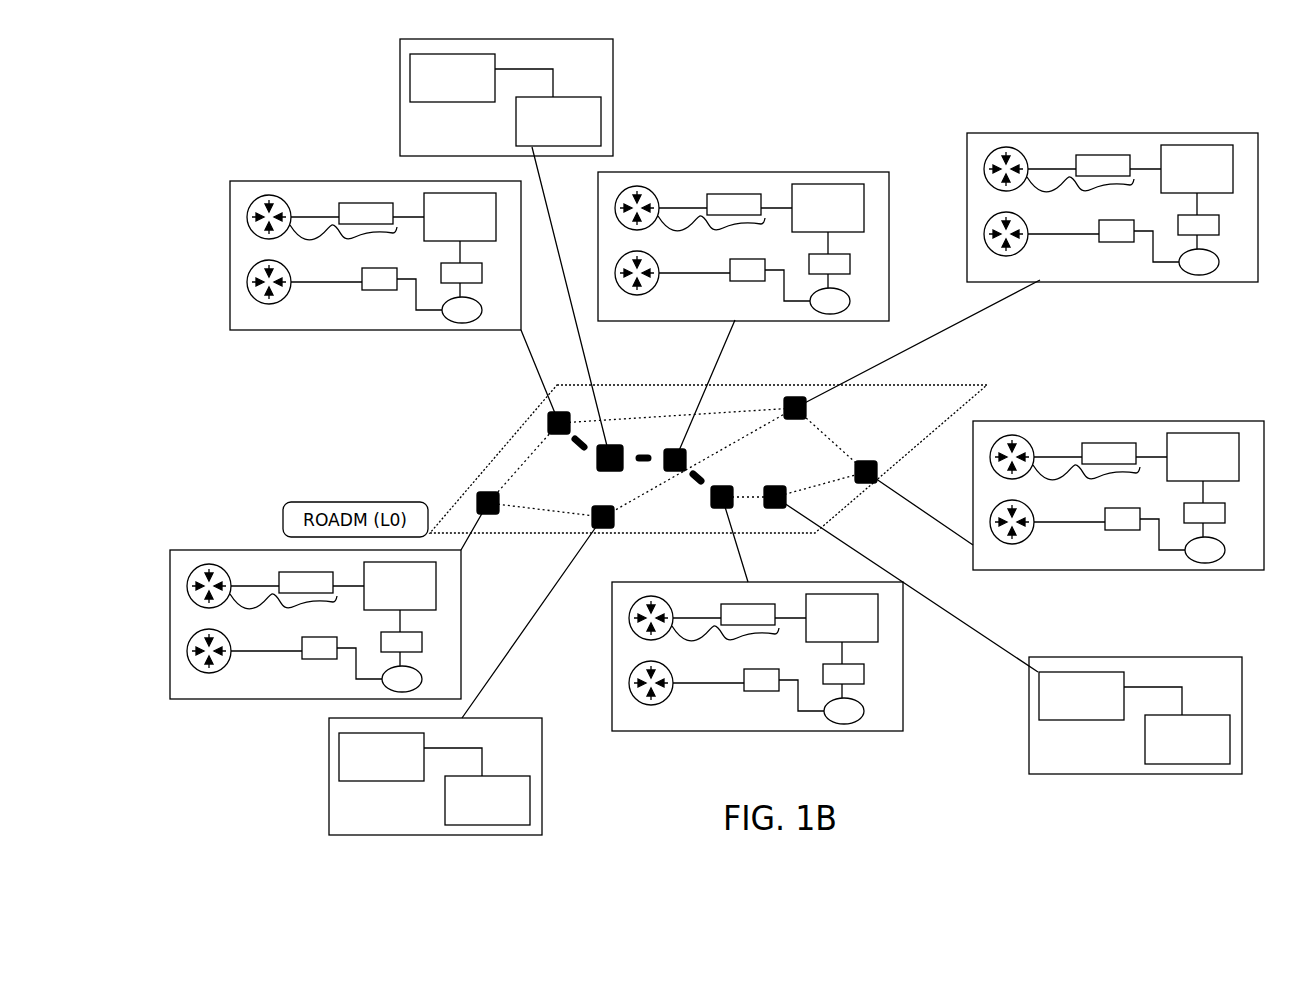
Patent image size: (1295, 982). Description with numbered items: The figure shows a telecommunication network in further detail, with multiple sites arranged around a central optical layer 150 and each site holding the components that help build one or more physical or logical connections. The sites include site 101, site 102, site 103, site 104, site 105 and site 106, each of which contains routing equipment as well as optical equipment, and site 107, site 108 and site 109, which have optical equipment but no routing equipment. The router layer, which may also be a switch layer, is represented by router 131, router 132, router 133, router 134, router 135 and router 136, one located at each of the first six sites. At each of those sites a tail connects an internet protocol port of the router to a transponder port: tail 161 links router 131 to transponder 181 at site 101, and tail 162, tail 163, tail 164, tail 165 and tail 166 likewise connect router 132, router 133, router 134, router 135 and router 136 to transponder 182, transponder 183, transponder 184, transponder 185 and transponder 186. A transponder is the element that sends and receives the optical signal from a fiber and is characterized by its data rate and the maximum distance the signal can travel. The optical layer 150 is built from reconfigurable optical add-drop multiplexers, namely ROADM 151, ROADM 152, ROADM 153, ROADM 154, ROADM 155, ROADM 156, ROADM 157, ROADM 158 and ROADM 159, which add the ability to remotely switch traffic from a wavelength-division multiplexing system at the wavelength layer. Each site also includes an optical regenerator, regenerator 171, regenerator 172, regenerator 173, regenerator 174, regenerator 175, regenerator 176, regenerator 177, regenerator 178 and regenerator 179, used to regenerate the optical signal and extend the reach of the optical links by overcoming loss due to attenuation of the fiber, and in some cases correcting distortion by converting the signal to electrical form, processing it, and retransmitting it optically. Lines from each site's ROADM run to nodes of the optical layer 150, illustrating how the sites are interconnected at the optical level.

The site 101 is at (375, 237).
The site 102 is at (1112, 189).
The site 103 is at (1118, 477).
The site 104 is at (760, 636).
The site 105 is at (315, 601).
The site 106 is at (743, 219).
The site 107 is at (534, 97).
The site 108 is at (450, 755).
The site 109 is at (1153, 695).
The router 131 is at (269, 223).
The router 132 is at (1006, 175).
The router 133 is at (1012, 463).
The router 134 is at (651, 624).
The router 135 is at (209, 592).
The router 136 is at (637, 214).
The optical layer 150 is at (903, 455).
The ROADM 151 is at (460, 217).
The ROADM 152 is at (1197, 169).
The ROADM 153 is at (1203, 457).
The ROADM 154 is at (842, 618).
The ROADM 155 is at (400, 586).
The ROADM 156 is at (828, 208).
The ROADM 157 is at (558, 121).
The ROADM 158 is at (487, 800).
The ROADM 159 is at (1187, 739).
The tail 161 is at (343, 242).
The tail 162 is at (1080, 194).
The tail 163 is at (1086, 482).
The tail 164 is at (725, 643).
The tail 165 is at (283, 611).
The tail 166 is at (711, 233).
The regenerator 171 is at (461, 273).
The regenerator 172 is at (1198, 225).
The regenerator 173 is at (1204, 513).
The regenerator 174 is at (843, 674).
The regenerator 175 is at (401, 642).
The regenerator 176 is at (829, 264).
The regenerator 177 is at (452, 78).
The regenerator 178 is at (381, 757).
The regenerator 179 is at (1081, 696).
The transponder 181 is at (366, 213).
The transponder 182 is at (1103, 165).
The transponder 183 is at (1109, 453).
The transponder 184 is at (748, 614).
The transponder 185 is at (306, 582).
The transponder 186 is at (734, 204).